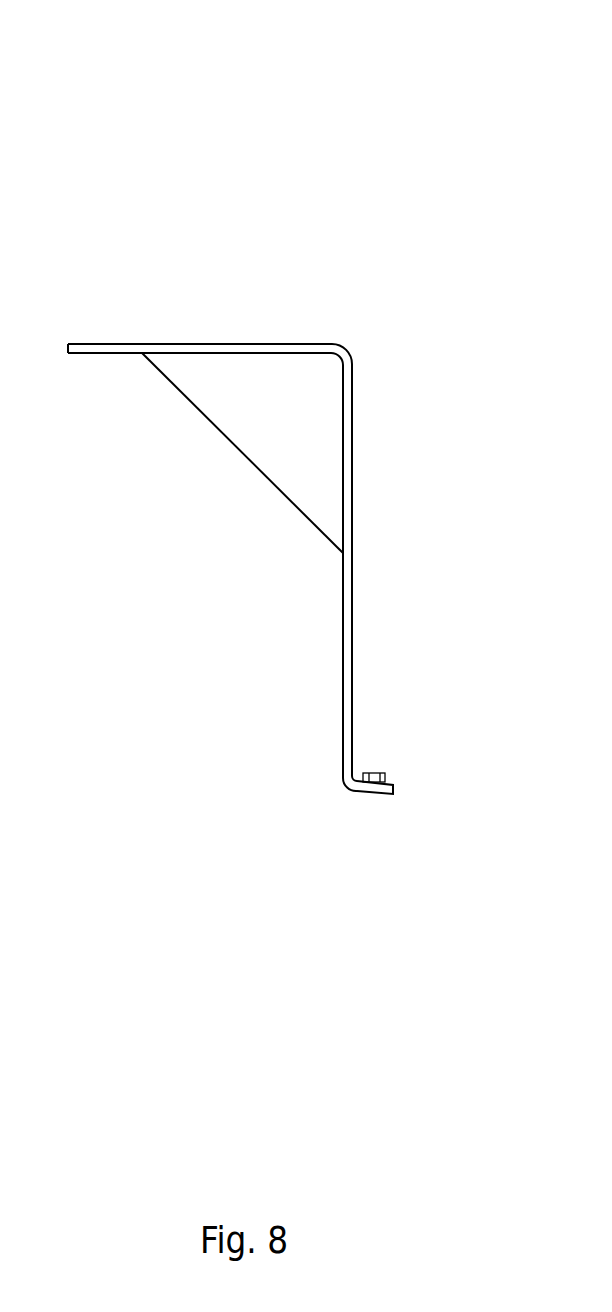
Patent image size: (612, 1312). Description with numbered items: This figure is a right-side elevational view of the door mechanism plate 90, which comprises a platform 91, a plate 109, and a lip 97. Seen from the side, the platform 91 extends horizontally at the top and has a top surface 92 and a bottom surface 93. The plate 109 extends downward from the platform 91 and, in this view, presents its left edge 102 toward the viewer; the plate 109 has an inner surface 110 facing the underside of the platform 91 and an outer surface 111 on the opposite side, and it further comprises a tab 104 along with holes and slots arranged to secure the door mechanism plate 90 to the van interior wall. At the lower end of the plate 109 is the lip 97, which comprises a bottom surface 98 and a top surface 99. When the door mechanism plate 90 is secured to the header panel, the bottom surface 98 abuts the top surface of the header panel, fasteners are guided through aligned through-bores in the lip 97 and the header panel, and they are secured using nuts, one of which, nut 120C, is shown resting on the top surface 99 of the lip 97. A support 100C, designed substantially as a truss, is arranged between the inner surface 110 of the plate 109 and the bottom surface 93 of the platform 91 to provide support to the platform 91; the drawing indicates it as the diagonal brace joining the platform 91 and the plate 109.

The door mechanism plate 90 is at (425, 100).
The platform 91 is at (255, 352).
The top surface 92 is at (172, 343).
The bottom surface 93 is at (87, 353).
The left edge 102 is at (352, 412).
The plate 109 is at (352, 484).
The outer surface 111 is at (352, 533).
The tab 104 is at (349, 625).
The inner surface 110 is at (343, 701).
The support 100C is at (258, 440).
The nut 120C is at (369, 772).
The top surface 99 is at (388, 779).
The lip 97 is at (367, 792).
The bottom surface 98 is at (377, 795).